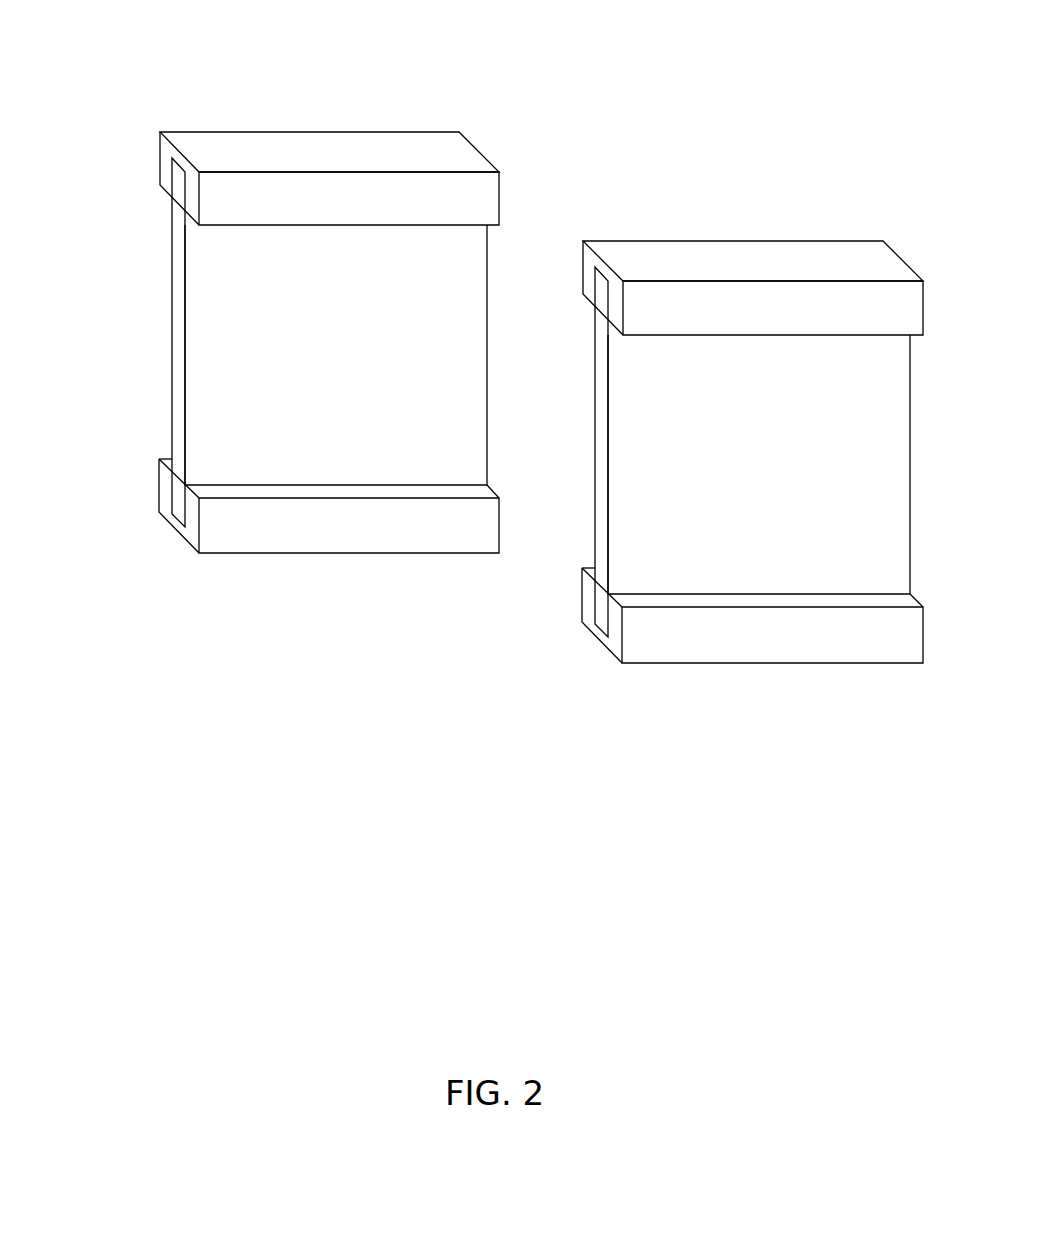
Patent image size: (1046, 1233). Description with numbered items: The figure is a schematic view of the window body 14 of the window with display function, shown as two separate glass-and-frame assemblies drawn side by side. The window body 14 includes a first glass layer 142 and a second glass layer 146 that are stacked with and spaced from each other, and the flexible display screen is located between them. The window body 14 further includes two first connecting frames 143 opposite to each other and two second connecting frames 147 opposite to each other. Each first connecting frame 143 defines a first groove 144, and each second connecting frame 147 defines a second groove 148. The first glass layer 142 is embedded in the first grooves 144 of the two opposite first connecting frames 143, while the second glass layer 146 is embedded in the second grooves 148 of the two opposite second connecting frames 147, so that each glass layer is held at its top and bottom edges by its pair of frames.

The window body 14 is at (529, 62).
The first glass layer 142 is at (638, 443).
The first connecting frame 143 is at (773, 255).
The first groove 144 is at (596, 270).
The second glass layer 146 is at (213, 335).
The second connecting frame 147 is at (350, 145).
The second groove 148 is at (172, 160).